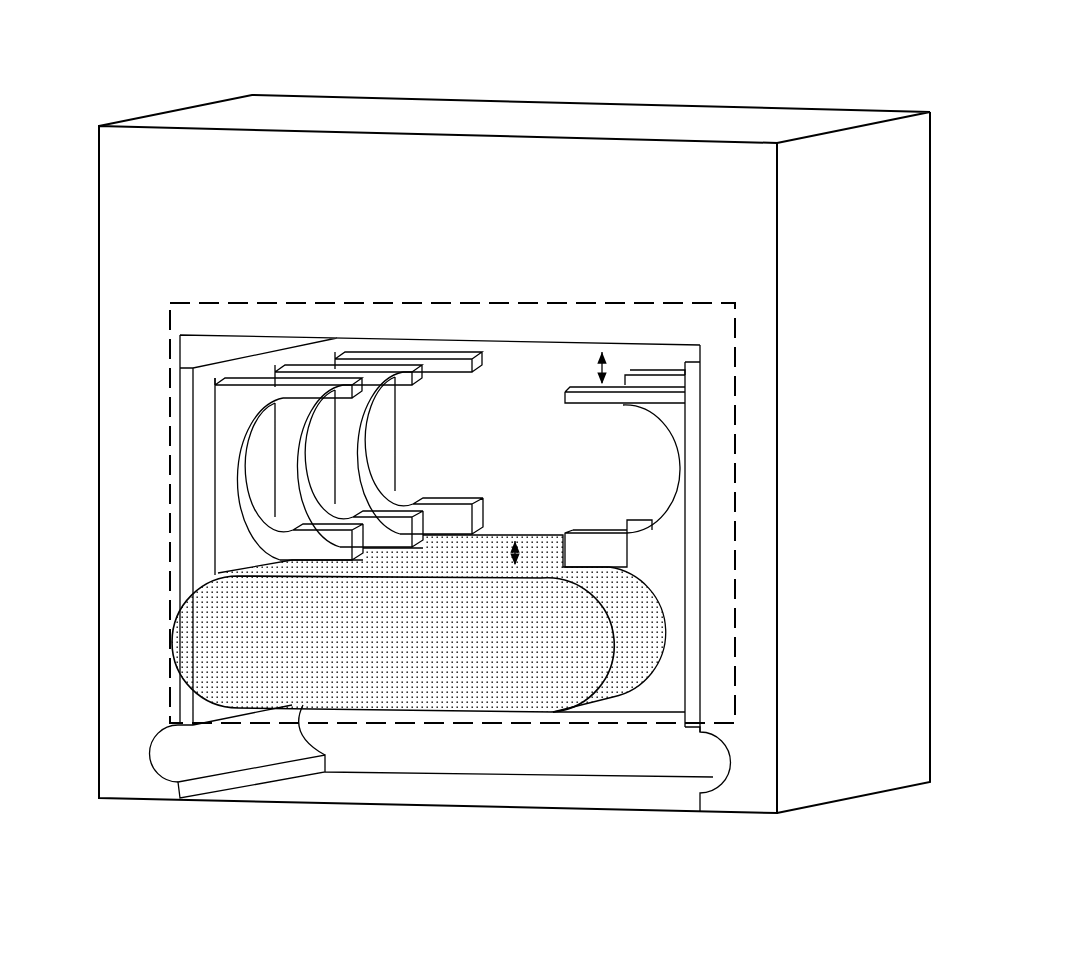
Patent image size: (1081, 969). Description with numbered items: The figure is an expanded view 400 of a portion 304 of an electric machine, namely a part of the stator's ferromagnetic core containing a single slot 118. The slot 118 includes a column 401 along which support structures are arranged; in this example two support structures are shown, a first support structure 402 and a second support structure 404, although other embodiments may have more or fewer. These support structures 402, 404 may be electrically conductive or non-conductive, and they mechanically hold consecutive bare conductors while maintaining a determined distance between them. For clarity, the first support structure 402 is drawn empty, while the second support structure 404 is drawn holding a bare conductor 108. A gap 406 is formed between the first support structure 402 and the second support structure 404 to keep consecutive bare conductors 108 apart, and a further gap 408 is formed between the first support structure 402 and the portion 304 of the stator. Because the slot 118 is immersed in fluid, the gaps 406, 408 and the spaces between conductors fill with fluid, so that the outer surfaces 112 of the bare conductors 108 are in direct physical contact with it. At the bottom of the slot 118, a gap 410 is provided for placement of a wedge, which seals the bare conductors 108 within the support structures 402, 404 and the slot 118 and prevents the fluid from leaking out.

The expanded view 400 is at (268, 52).
The portion 304 is at (118, 249).
The gap 408 is at (520, 362).
The first support structure 402 is at (242, 437).
The slot 118 is at (408, 465).
The column 401 is at (230, 513).
The second support structure 404 is at (265, 538).
The gap 406 is at (533, 527).
The bare conductor 108 is at (645, 653).
The outer surface 112 is at (418, 690).
The gap 410 is at (575, 757).